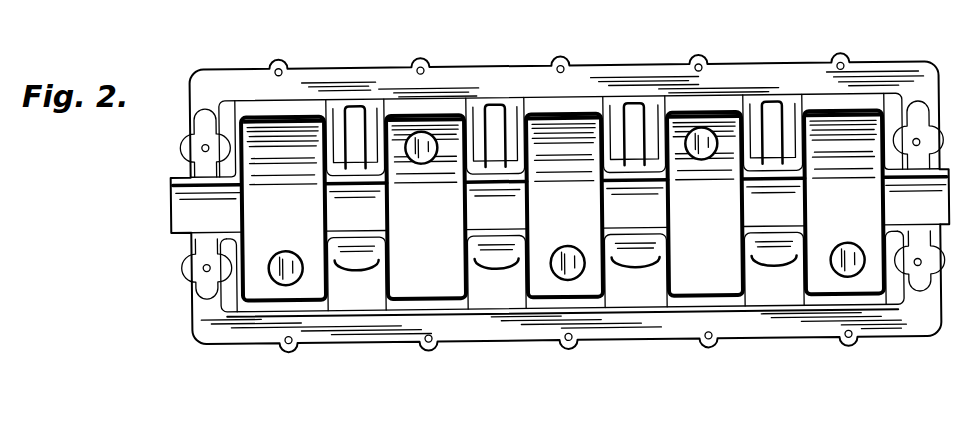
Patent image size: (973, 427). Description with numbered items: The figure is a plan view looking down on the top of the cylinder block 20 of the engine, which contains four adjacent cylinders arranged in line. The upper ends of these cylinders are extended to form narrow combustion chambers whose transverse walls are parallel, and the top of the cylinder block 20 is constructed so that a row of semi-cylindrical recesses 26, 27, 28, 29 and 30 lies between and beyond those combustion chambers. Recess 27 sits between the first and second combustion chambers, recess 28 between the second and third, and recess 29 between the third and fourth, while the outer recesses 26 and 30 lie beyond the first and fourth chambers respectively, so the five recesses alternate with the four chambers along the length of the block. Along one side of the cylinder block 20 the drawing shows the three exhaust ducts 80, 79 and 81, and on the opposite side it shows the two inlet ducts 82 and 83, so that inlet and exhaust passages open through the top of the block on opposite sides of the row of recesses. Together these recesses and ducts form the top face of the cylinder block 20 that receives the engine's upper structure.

The cylinder block 20 is at (186, 236).
The semi-cylindrical recess 26 is at (257, 138).
The semi-cylindrical recess 27 is at (393, 141).
The semi-cylindrical recess 28 is at (543, 140).
The semi-cylindrical recess 29 is at (673, 118).
The semi-cylindrical recess 30 is at (827, 140).
The exhaust duct 79 is at (565, 270).
The exhaust duct 80 is at (283, 270).
The exhaust duct 81 is at (847, 272).
The inlet duct 82 is at (429, 134).
The inlet duct 83 is at (705, 133).